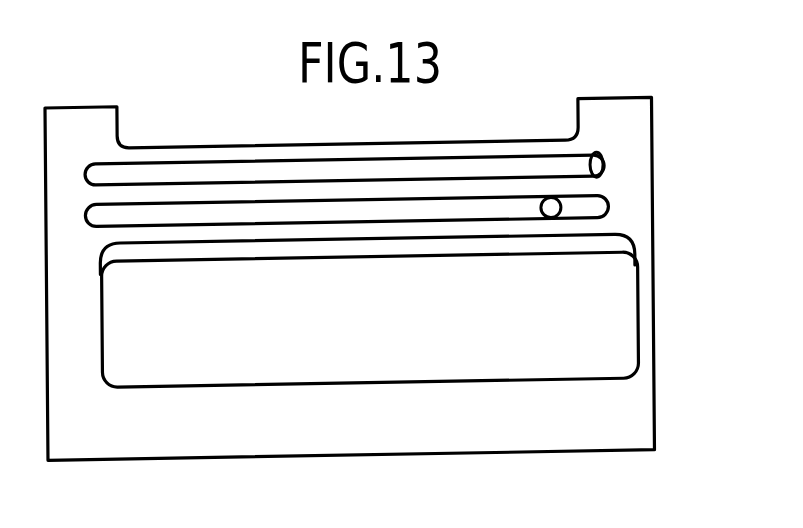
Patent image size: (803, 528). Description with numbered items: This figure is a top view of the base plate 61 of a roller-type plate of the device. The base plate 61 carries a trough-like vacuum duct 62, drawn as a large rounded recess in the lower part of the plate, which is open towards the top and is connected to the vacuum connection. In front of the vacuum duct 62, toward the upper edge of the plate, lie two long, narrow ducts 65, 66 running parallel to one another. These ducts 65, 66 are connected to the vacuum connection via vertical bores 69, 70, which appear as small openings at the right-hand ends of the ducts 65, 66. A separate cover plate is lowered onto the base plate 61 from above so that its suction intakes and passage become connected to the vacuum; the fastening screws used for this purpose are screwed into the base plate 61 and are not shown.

The base plate 61 is at (628, 208).
The trough-like vacuum duct 62 is at (376, 330).
The duct 65 is at (156, 175).
The duct 66 is at (229, 213).
The vertical bore 69 is at (602, 157).
The vertical bore 70 is at (570, 197).